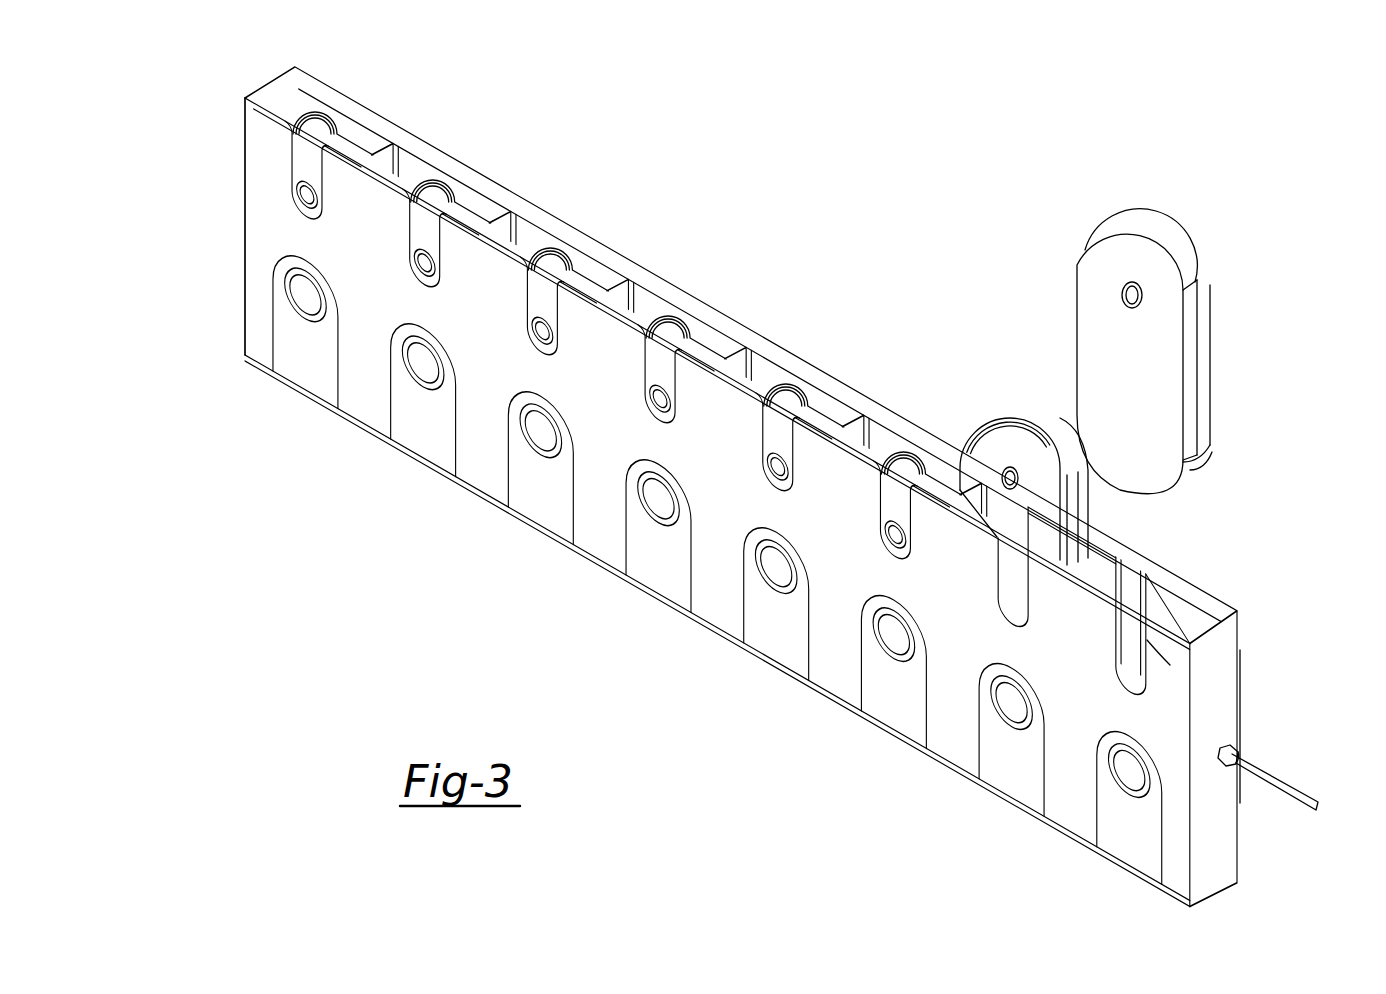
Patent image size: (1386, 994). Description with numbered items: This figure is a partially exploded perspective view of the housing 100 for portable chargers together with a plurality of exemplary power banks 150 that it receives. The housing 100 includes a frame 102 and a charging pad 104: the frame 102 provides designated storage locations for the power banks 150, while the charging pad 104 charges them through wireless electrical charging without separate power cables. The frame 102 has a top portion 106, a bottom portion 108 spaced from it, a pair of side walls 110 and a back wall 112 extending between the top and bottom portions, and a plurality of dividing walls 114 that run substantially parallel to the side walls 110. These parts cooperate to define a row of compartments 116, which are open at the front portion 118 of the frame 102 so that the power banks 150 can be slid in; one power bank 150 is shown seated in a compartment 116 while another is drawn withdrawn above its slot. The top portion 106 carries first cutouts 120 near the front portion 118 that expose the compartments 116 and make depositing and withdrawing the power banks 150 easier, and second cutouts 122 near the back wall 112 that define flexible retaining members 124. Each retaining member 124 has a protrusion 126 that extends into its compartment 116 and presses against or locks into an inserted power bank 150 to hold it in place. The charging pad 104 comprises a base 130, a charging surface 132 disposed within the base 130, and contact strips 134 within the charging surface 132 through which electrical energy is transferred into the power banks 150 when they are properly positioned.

The housing 100 is at (968, 165).
The frame 102 is at (1228, 585).
The charging pad 104 is at (1145, 640).
The top portion 106 is at (265, 228).
The bottom portion 108 is at (815, 363).
The side walls 110 is at (262, 84).
The back wall 112 is at (1213, 897).
The dividing walls 114 is at (392, 166).
The compartments 116 is at (285, 100).
The front portion 118 is at (860, 305).
The first cutouts 120 is at (303, 150).
The second cutouts 122 is at (326, 386).
The retaining members 124 is at (302, 378).
The protrusion 126 is at (302, 297).
The base 130 is at (1243, 725).
The charging surface 132 is at (1127, 638).
The contact strips 134 is at (1127, 657).
The power banks 150 is at (340, 132).